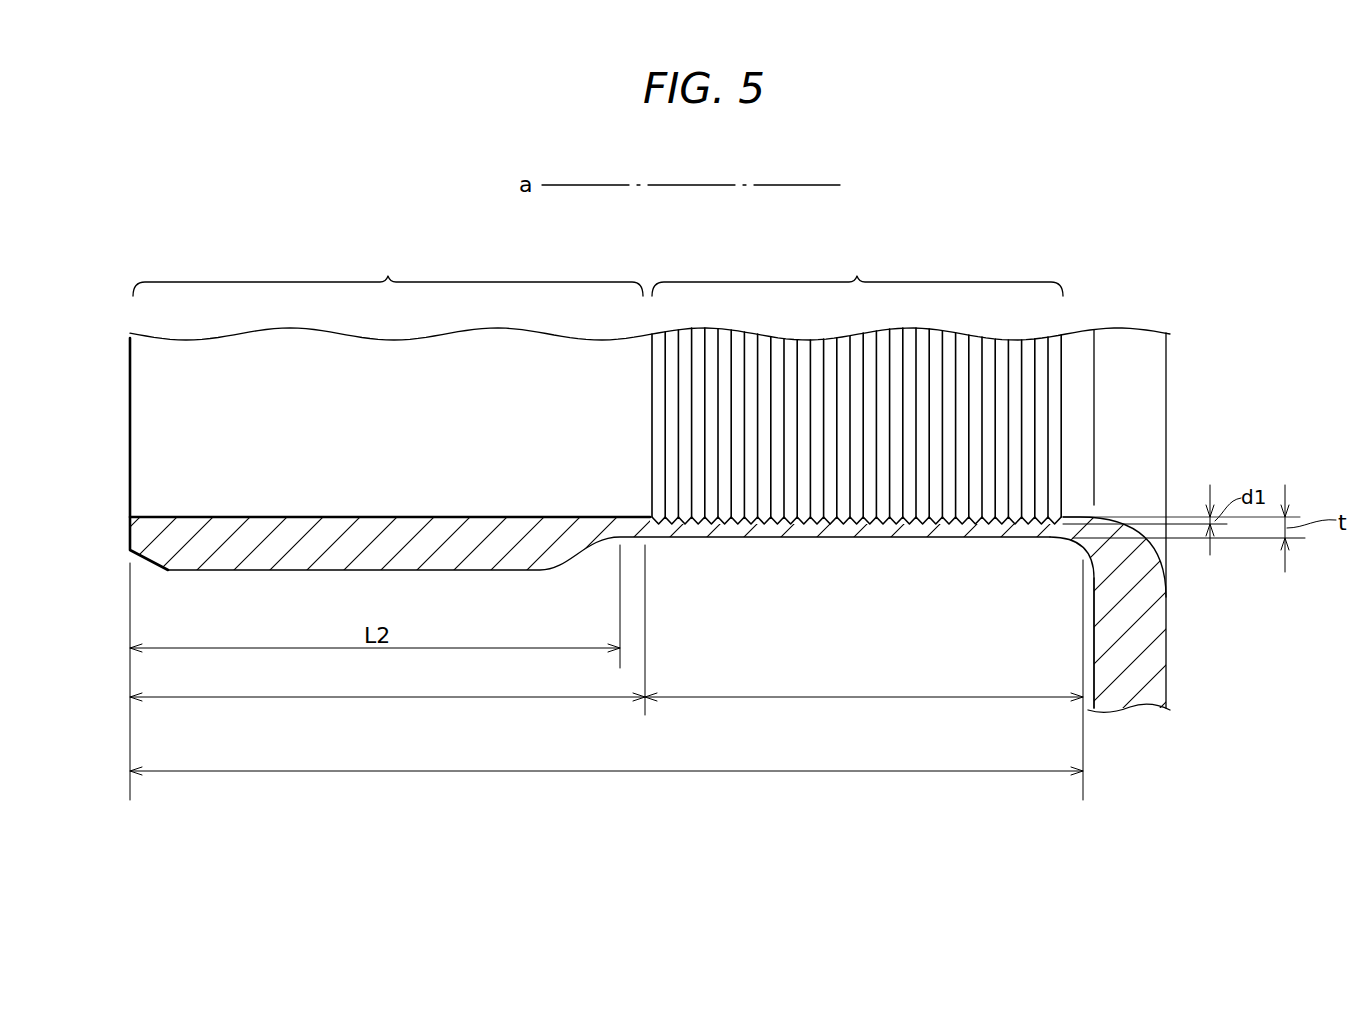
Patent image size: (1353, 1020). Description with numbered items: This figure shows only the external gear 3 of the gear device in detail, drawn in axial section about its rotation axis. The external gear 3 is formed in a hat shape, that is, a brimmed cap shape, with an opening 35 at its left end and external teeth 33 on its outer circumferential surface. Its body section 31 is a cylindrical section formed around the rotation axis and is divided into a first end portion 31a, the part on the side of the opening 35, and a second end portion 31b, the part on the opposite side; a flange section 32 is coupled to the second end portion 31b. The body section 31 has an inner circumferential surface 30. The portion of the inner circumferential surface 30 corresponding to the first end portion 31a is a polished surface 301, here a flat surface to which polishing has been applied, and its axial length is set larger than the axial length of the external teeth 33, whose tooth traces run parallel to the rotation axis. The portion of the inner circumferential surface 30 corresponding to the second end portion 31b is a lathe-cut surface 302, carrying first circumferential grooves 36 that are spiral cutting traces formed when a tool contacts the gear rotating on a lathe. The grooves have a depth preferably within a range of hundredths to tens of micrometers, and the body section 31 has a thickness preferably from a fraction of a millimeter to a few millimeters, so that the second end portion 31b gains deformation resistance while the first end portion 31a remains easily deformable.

The external gear 3 is at (1158, 248).
The inner circumferential surface 30 is at (190, 516).
The body section 31 is at (606, 759).
The first end portion 31a is at (387, 685).
The second end portion 31b is at (864, 685).
The flange section 32 is at (1152, 667).
The external teeth 33 is at (303, 555).
The opening 35 is at (130, 402).
The first circumferential grooves 36 is at (682, 420).
The polished surface 301 is at (388, 272).
The lathe-cut surface 302 is at (857, 272).